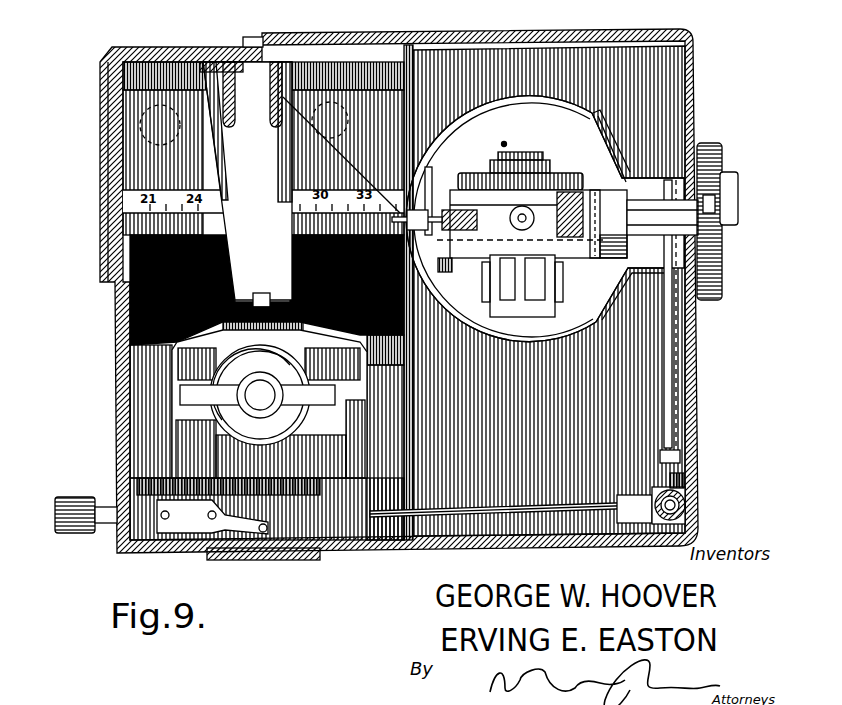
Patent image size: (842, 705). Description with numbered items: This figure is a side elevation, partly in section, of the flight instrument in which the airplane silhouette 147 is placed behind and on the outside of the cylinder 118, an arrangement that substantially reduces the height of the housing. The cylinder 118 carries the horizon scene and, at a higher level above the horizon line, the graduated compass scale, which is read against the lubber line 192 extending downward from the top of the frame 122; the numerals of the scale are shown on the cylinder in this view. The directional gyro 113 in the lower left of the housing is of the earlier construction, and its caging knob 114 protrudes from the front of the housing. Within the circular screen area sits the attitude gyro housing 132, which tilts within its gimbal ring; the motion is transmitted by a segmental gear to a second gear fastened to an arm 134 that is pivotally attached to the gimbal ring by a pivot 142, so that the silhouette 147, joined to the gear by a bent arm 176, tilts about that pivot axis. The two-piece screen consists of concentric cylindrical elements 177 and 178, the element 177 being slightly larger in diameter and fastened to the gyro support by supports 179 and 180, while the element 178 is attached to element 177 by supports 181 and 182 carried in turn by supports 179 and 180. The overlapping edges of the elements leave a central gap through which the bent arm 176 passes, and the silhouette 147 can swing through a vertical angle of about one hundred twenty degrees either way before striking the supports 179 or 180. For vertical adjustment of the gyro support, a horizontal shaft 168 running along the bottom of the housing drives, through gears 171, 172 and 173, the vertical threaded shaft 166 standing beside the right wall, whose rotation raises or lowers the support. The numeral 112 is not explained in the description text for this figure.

The housing 112 is at (110, 195).
The directional gyro 113 is at (359, 492).
The caging knob 114 is at (80, 497).
The cylinder 118 is at (130, 163).
The frame 122 is at (213, 45).
The gyro housing 132 is at (568, 173).
The arm 134 is at (428, 175).
The pivot 142 is at (480, 237).
The airplane silhouette 147 is at (400, 213).
The vertical threaded shaft 166 is at (668, 383).
The horizontal shaft 168 is at (500, 507).
The gear 171 is at (668, 530).
The gear 172 is at (682, 522).
The gear 173 is at (687, 490).
The bent arm 176 is at (420, 302).
The screen element 177 is at (520, 95).
The screen element 178 is at (543, 102).
The support 179 is at (615, 155).
The support 180 is at (617, 292).
The support 181 is at (589, 115).
The support 182 is at (612, 305).
The lubber line 192 is at (343, 162).